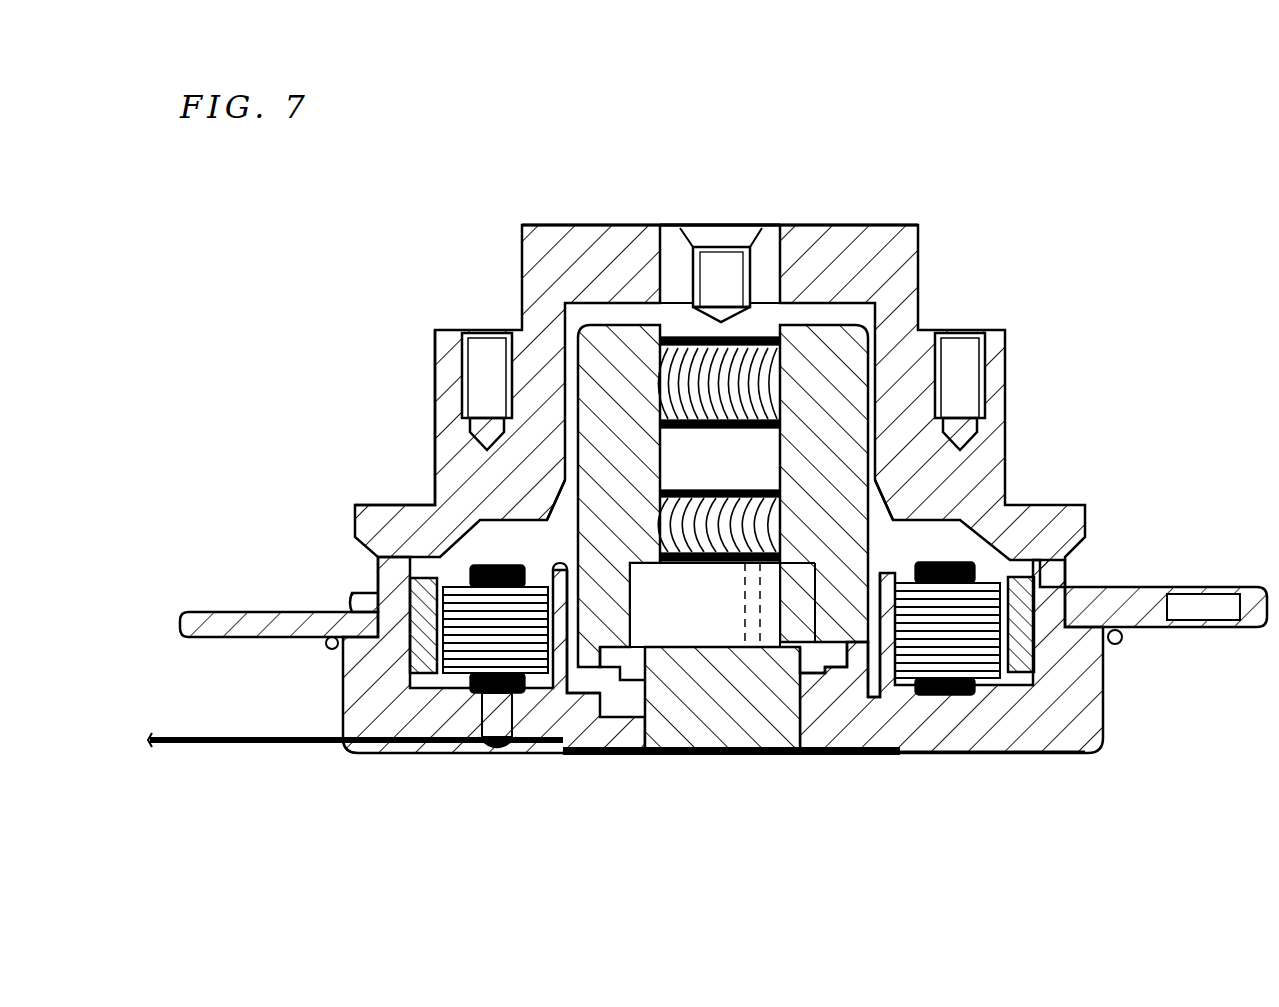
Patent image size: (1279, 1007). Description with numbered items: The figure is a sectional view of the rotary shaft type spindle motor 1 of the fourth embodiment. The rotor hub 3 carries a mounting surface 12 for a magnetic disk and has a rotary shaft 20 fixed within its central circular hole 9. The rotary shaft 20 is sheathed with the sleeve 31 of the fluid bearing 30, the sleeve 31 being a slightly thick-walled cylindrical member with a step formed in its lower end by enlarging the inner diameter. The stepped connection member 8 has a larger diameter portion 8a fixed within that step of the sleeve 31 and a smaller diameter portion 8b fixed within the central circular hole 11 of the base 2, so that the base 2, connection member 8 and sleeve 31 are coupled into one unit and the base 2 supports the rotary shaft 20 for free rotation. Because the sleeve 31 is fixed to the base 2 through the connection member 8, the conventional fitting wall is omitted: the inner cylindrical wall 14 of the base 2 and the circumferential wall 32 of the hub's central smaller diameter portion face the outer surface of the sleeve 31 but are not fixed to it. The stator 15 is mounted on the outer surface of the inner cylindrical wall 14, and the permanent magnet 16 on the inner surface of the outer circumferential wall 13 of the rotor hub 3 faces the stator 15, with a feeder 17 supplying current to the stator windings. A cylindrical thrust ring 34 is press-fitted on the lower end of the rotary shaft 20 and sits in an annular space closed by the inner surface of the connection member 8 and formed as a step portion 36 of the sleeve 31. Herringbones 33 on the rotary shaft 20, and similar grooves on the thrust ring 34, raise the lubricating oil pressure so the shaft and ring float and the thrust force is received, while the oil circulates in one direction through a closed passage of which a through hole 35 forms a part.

The rotary shaft type spindle motor 1 is at (920, 135).
The base 2 is at (384, 768).
The rotor hub 3 is at (498, 200).
The connection member 8 is at (710, 752).
The larger diameter portion 8a is at (836, 682).
The smaller diameter portion 8b is at (780, 722).
The central circular hole 9 is at (678, 238).
The central circular hole 11 is at (702, 748).
The mounting surface 12 is at (462, 333).
The outer circumferential wall 13 is at (395, 600).
The inner cylindrical wall 14 is at (554, 692).
The stator 15 is at (946, 648).
The permanent magnet 16 is at (1022, 692).
The feeder 17 is at (497, 757).
The rotary shaft 20 is at (767, 238).
The fluid bearing 30 is at (828, 318).
The sleeve 31 is at (835, 458).
The circumferential wall 32 is at (530, 374).
The herringbones 33 is at (696, 450).
The thrust ring 34 is at (650, 642).
The through hole 35 is at (745, 600).
The step portion 36 is at (822, 582).